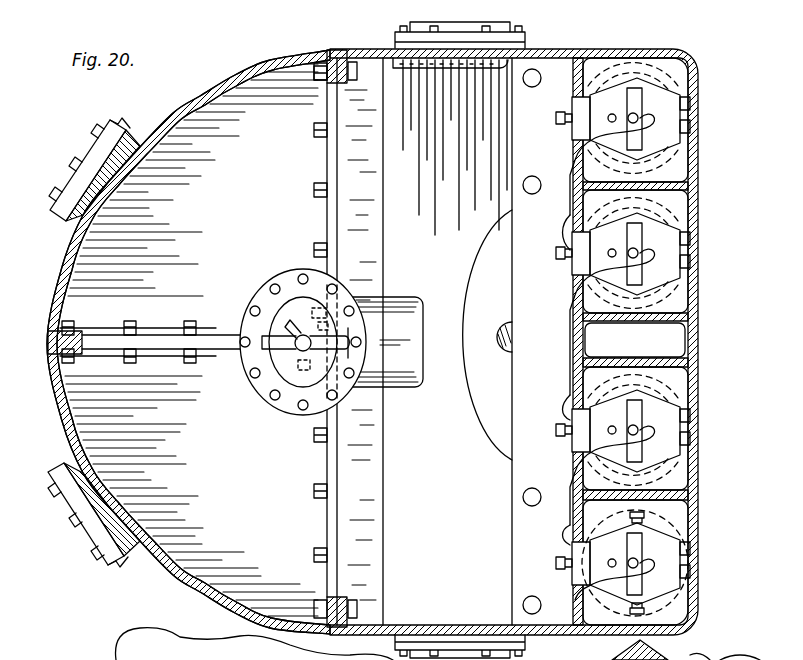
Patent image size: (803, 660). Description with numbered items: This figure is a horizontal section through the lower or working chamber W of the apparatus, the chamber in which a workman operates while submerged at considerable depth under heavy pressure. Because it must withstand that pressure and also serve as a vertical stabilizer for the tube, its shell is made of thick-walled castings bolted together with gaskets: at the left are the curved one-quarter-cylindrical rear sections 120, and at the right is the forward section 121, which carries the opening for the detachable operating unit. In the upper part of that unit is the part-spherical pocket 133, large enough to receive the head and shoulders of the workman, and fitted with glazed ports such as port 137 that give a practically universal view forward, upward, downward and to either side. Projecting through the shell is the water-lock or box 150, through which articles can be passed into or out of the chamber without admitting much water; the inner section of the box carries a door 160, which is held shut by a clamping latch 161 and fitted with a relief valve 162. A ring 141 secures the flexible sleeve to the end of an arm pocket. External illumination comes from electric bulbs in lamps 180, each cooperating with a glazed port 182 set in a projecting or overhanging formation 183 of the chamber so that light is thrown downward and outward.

The one-quarter-cylindrical rear section 120 is at (237, 62).
The working chamber W is at (298, 45).
The forward section 121 is at (455, 147).
The part-spherical pocket 133 is at (486, 403).
The glazed port 137 is at (498, 346).
The water-lock or box 150 is at (373, 378).
The door 160 is at (295, 373).
The clamping latch 161 is at (274, 341).
The relief valve 162 is at (299, 348).
The lamp 180 is at (652, 238).
The glazed port 182 is at (698, 383).
The projecting or overhanging formation 183 is at (698, 159).
The ring 141 is at (705, 659).